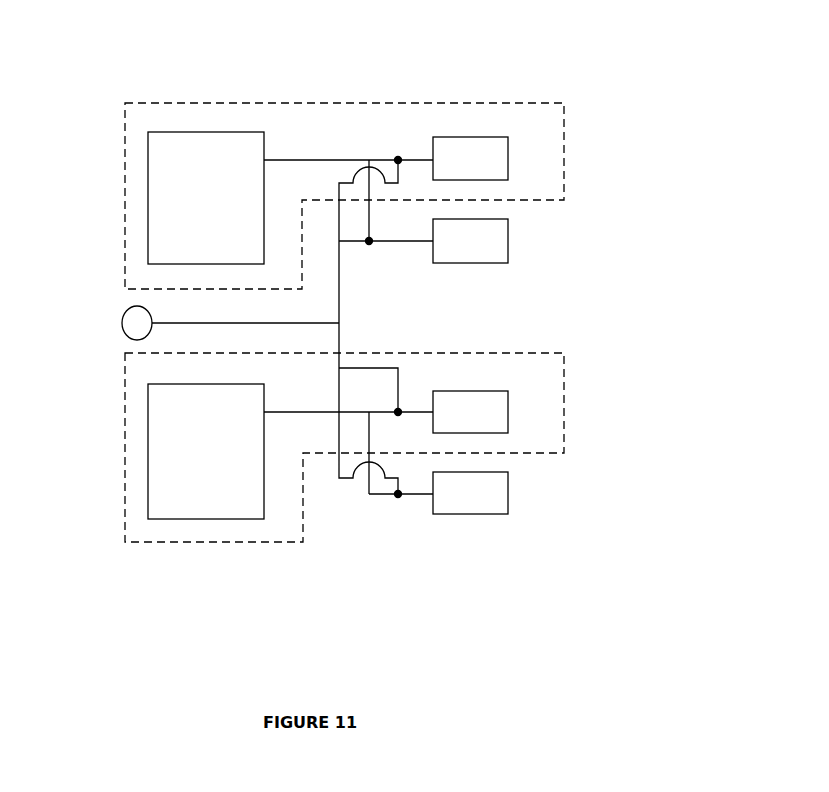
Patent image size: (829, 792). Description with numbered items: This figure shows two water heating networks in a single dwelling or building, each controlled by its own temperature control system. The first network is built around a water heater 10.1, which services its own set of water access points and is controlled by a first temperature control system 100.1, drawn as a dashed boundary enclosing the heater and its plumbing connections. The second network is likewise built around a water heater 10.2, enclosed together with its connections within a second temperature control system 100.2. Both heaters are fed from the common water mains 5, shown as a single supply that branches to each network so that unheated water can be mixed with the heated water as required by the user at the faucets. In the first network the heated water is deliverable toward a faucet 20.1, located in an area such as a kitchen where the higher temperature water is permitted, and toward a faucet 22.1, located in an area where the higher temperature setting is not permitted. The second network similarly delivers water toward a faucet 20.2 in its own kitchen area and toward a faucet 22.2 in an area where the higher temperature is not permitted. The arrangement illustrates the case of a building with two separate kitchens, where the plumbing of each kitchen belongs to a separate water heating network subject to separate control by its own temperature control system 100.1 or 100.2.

The water mains 5 is at (122, 323).
The water heater 10.1 is at (227, 131).
The water heater 10.2 is at (188, 519).
The faucet 20.1 is at (467, 138).
The faucet 20.2 is at (509, 422).
The faucet 22.1 is at (509, 252).
The faucet 22.2 is at (458, 514).
The temperature control system 100.1 is at (567, 108).
The temperature control system 100.2 is at (568, 368).